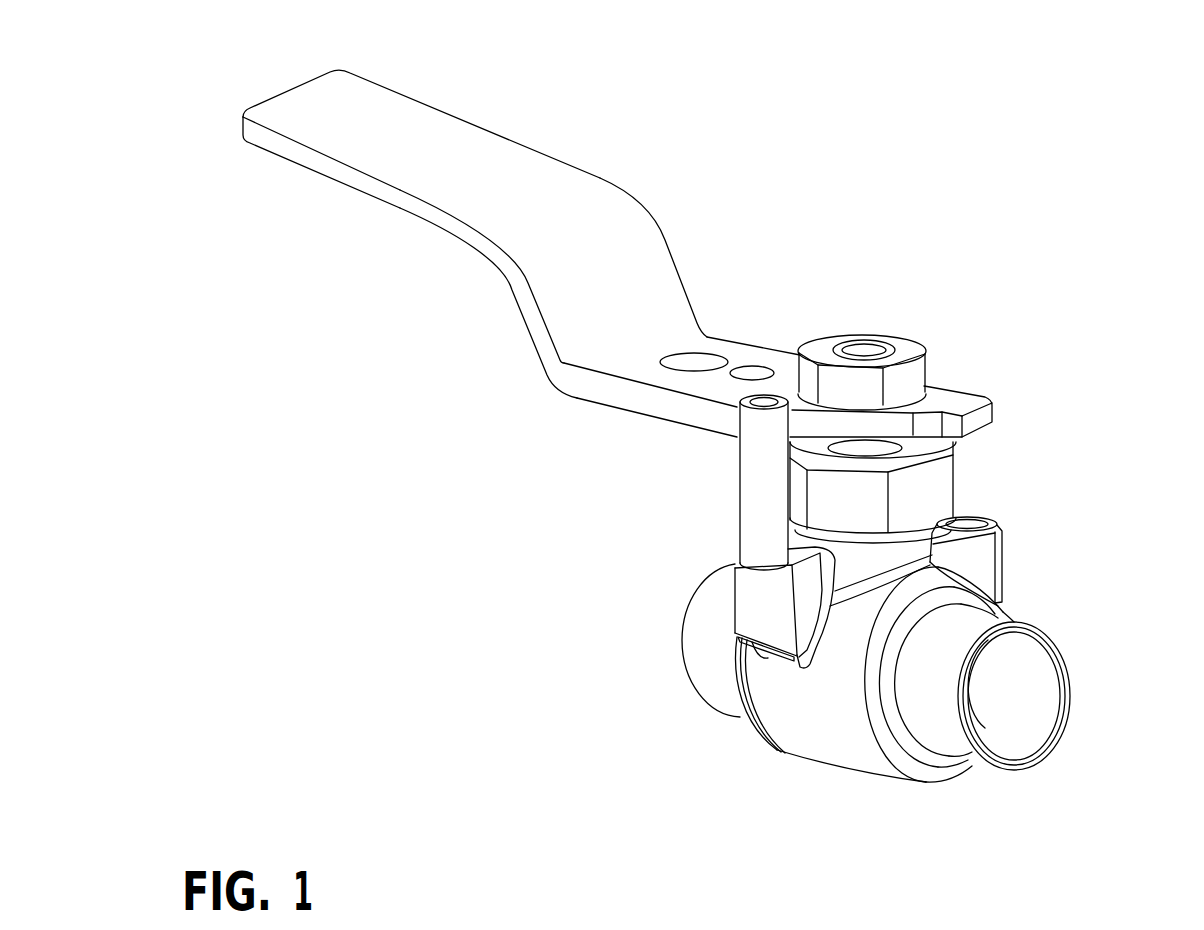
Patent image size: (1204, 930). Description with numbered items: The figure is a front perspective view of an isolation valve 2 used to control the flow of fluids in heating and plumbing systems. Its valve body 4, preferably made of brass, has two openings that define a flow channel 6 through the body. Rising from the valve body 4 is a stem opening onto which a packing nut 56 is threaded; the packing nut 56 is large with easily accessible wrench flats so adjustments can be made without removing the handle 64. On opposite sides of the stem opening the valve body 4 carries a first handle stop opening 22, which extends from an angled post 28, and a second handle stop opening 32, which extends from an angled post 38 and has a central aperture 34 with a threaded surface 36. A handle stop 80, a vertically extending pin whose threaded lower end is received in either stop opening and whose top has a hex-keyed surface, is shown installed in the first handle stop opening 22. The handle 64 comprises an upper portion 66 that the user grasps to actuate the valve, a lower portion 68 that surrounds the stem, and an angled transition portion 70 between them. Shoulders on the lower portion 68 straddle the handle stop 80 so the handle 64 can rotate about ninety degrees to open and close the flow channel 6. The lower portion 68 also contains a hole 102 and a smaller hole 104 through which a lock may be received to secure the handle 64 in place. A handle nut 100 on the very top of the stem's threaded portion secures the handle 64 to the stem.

The isolation valve 2 is at (681, 580).
The valve body 4 is at (813, 728).
The flow channel 6 is at (1008, 692).
The first handle stop opening 22 is at (777, 600).
The angled post 28 is at (777, 633).
The second handle stop opening 32 is at (1005, 568).
The central aperture 34 is at (978, 520).
The threaded surface 36 is at (997, 527).
The angled post 38 is at (1005, 603).
The packing nut 56 is at (927, 485).
The handle 64 is at (566, 192).
The upper portion 66 is at (417, 147).
The lower portion 68 is at (748, 353).
The transition portion 70 is at (640, 280).
The handle stop 80 is at (753, 487).
The handle nut 100 is at (907, 377).
The hole 102 is at (687, 363).
The smaller hole 104 is at (750, 372).